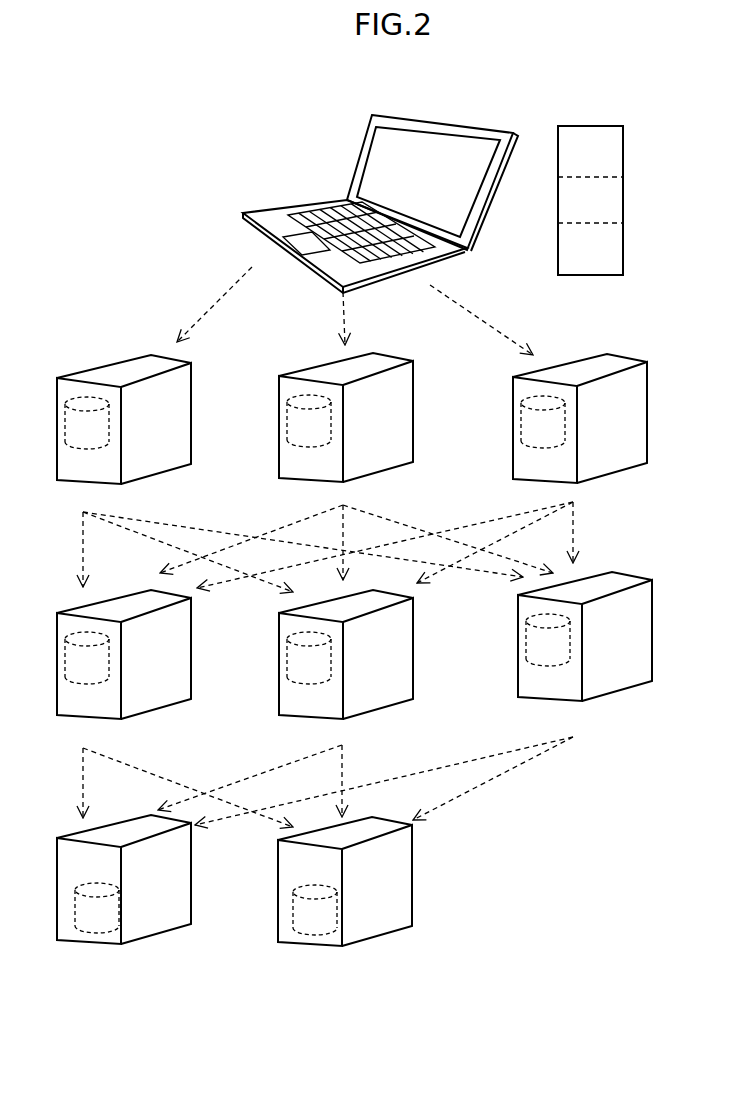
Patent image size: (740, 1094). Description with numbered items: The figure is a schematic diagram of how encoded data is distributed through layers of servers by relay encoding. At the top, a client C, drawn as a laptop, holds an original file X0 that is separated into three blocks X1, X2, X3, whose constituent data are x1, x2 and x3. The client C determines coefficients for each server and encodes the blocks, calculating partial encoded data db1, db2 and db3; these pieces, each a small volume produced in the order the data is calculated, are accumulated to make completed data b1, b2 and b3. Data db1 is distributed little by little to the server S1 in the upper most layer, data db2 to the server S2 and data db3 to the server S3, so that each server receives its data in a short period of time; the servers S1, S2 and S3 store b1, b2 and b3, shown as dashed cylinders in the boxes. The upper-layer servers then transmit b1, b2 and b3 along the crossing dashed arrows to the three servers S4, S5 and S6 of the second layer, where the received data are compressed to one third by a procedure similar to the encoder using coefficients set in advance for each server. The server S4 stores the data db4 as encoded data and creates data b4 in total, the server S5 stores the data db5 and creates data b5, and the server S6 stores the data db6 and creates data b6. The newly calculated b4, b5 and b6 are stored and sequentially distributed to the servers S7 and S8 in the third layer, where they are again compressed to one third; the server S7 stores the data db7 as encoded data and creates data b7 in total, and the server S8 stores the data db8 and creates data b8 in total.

The client C is at (320, 187).
The original file X0 is at (632, 195).
The first block X1 is at (590, 155).
The second block X2 is at (590, 201).
The third block X3 is at (590, 253).
The server S1 is at (124, 419).
The server S2 is at (346, 417).
The server S3 is at (580, 418).
The server S4 is at (124, 654).
The server S5 is at (346, 654).
The server S6 is at (585, 636).
The server S7 is at (137, 915).
The server S8 is at (358, 925).
The completed data b1 is at (87, 424).
The completed data b2 is at (309, 422).
The completed data b3 is at (543, 423).
The total data b4 is at (87, 659).
The total data b5 is at (309, 659).
The total data b6 is at (548, 641).
The total data b7 is at (97, 908).
The total data b8 is at (315, 910).
The encoded partial data db1 is at (279, 429).
The encoded partial data db2 is at (356, 436).
The encoded partial data db3 is at (428, 436).
The encoded data db4 is at (179, 772).
The encoded data db5 is at (274, 771).
The encoded data db6 is at (417, 770).
The encoded data db7 is at (92, 872).
The encoded data db8 is at (313, 873).